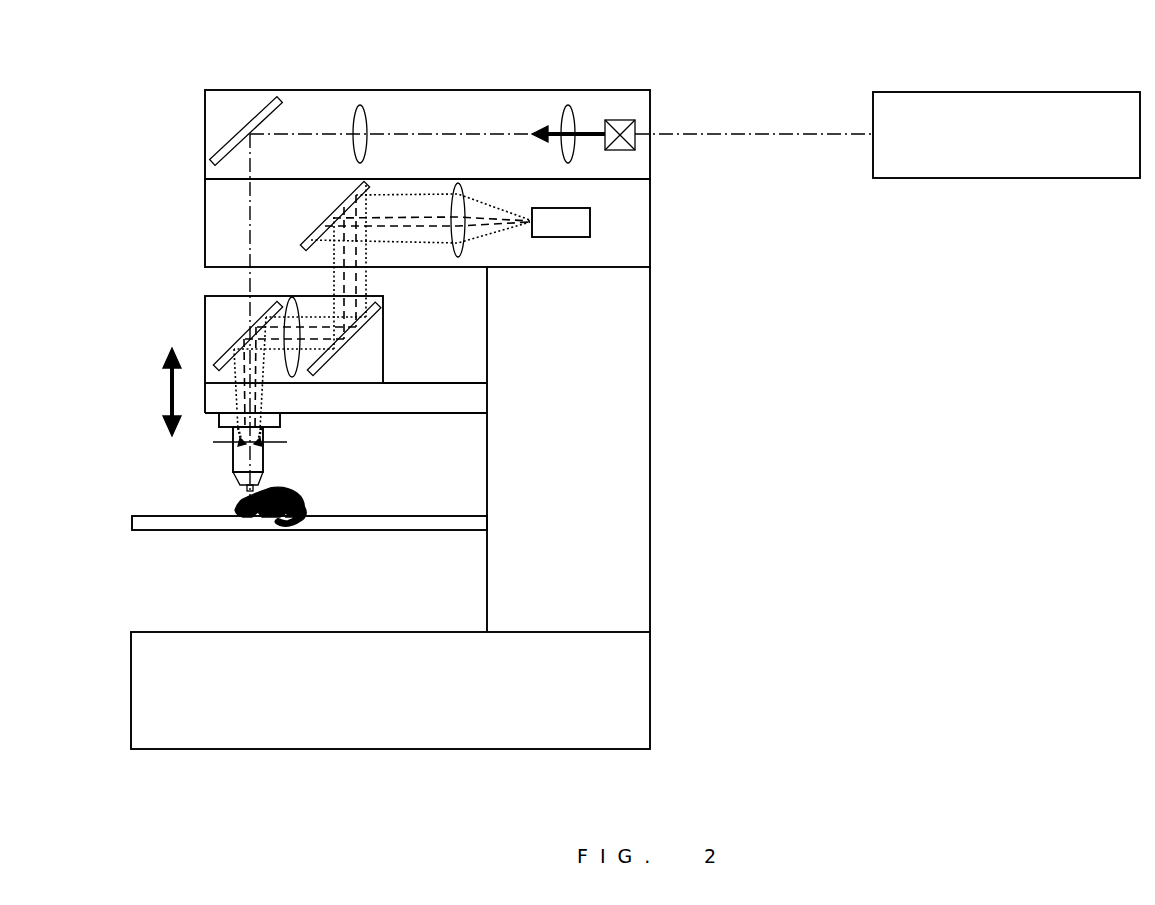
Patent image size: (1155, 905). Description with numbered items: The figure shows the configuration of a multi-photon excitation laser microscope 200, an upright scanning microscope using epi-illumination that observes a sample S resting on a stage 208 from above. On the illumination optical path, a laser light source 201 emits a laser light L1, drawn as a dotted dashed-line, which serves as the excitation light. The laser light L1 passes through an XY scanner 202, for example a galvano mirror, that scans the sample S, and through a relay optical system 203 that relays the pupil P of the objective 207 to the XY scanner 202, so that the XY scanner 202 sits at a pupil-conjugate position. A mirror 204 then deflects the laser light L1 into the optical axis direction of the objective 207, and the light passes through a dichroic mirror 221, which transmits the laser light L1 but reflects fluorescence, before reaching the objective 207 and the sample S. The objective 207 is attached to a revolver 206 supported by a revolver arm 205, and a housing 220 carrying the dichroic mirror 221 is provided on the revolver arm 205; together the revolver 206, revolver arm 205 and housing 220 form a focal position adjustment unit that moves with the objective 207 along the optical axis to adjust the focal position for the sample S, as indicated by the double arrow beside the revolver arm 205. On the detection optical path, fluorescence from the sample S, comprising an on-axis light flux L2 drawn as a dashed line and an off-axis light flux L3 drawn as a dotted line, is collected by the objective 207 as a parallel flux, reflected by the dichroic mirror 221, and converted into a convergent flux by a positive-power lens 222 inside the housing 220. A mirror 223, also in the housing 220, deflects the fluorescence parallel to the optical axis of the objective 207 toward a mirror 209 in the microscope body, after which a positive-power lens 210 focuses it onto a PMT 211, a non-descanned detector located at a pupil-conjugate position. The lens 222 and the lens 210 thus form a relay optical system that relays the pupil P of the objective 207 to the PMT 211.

The multi-photon excitation laser microscope 200 is at (1117, 70).
The laser light source 201 is at (928, 92).
The XY scanner 202 is at (623, 120).
The relay optical system 203 is at (583, 108).
The mirror 204 is at (260, 110).
The revolver arm 205 is at (206, 400).
The revolver 206 is at (218, 422).
The objective 207 is at (233, 462).
The stage 208 is at (131, 530).
The mirror 209 is at (333, 228).
The lens 210 is at (460, 253).
The PMT 211 is at (590, 222).
The housing 220 is at (206, 318).
The dichroic mirror 221 is at (232, 348).
The lens 222 is at (293, 298).
The mirror 223 is at (355, 325).
The laser light L1 is at (730, 132).
The on-axis light flux L2 is at (477, 225).
The off-axis light flux L3 is at (360, 280).
The pupil P is at (287, 442).
The sample S is at (298, 493).